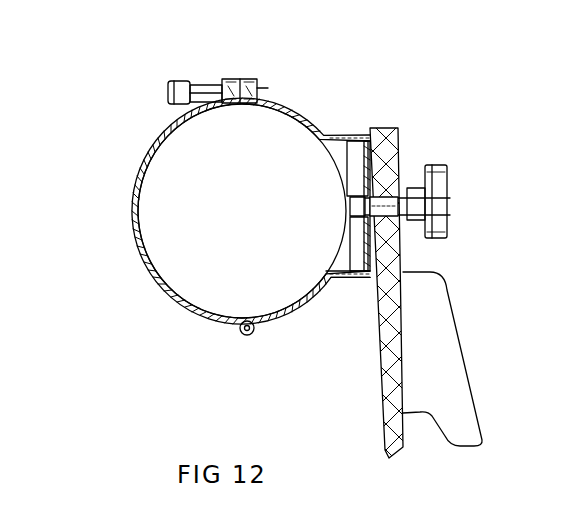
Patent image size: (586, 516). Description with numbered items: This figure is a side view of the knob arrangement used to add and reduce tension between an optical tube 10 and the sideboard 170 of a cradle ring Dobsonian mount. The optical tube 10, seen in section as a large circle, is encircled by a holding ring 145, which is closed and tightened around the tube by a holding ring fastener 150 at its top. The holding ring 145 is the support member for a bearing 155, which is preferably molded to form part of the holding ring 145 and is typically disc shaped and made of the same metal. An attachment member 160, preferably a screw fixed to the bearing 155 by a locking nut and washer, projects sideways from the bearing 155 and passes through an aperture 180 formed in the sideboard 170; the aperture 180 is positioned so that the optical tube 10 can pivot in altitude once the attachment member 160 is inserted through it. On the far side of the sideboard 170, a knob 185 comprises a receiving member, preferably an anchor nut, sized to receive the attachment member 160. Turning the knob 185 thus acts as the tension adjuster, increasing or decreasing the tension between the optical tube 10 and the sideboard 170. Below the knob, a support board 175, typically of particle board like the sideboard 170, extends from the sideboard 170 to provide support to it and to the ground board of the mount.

The optical tube 10 is at (268, 160).
The holding ring 145 is at (132, 247).
The holding ring fastener 150 is at (172, 80).
The bearing 155 is at (363, 278).
The attachment member 160 is at (400, 188).
The sideboard 170 is at (395, 128).
The support board 175 is at (433, 363).
The aperture 180 is at (410, 240).
The knob 185 is at (447, 198).